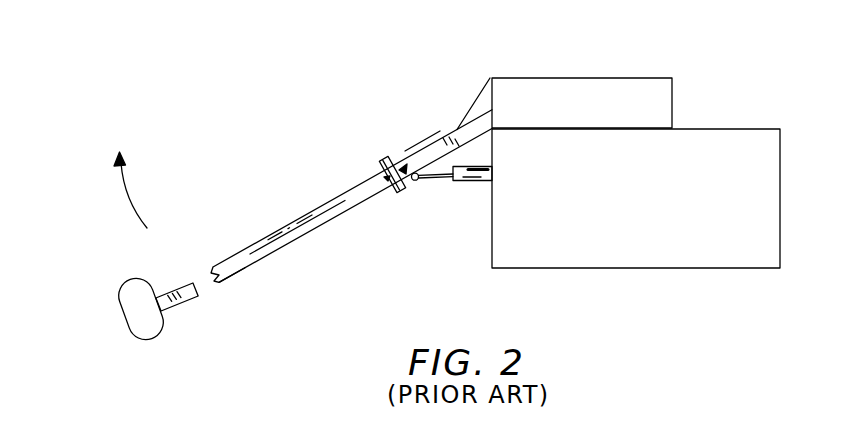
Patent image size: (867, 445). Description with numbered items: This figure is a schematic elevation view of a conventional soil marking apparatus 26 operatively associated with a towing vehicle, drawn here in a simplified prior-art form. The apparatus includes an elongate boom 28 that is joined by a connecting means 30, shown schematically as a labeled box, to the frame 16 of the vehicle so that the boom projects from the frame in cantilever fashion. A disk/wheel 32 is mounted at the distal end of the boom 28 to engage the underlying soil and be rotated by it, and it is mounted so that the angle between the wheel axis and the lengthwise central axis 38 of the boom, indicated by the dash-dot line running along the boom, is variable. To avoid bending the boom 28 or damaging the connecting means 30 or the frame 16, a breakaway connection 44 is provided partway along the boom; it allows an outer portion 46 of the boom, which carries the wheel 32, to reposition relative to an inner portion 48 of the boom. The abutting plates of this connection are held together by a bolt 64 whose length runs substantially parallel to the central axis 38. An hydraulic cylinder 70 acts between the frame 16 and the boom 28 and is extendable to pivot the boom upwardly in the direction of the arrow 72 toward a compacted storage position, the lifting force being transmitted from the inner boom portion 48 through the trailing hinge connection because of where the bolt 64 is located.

The frame 16 is at (652, 229).
The soil marking apparatus 26 is at (301, 250).
The elongate boom 28 is at (343, 193).
The connecting means 30 is at (582, 103).
The disk/wheel 32 is at (122, 283).
The central axis of the boom 38 is at (270, 238).
The breakaway connection 44 is at (372, 148).
The outer portion of the boom 46 is at (241, 270).
The inner portion of the boom 48 is at (420, 150).
The bolt 64 is at (385, 190).
The hydraulic cylinder 70 is at (470, 181).
The arrow 72 is at (123, 186).